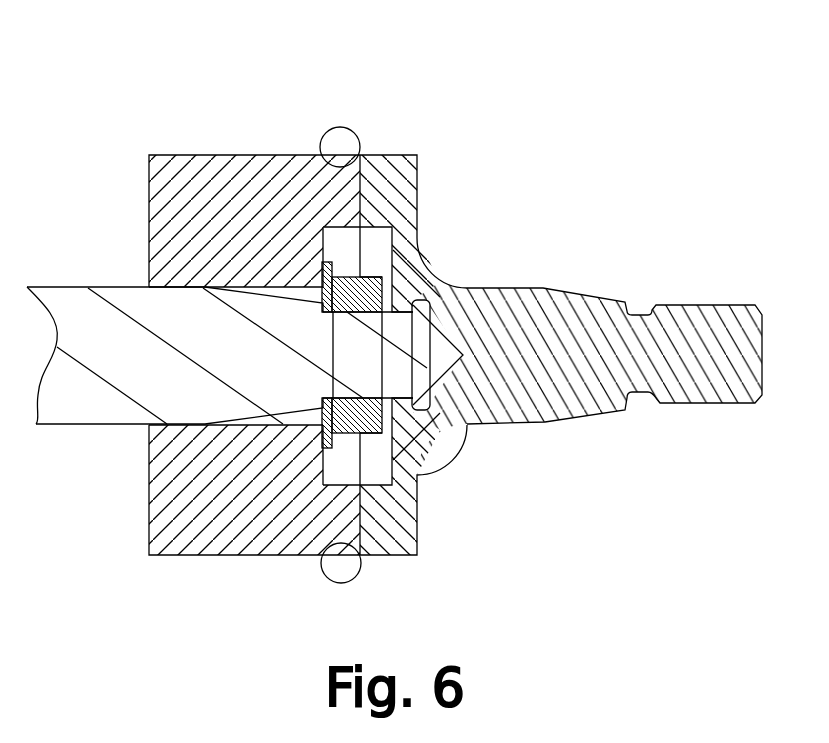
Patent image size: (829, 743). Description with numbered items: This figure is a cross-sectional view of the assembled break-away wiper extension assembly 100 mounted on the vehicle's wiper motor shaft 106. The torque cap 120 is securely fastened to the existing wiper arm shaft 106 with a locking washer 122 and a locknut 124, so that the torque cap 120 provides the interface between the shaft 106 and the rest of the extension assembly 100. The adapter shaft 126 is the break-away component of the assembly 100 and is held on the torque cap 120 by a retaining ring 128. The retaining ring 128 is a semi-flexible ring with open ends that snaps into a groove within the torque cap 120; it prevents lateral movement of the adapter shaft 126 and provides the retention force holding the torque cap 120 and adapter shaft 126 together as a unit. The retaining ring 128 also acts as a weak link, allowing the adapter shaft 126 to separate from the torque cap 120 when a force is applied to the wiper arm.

The wiper extension assembly 100 is at (522, 123).
The wiper motor shaft 106 is at (127, 382).
The torque cap 120 is at (253, 537).
The locking washer 122 is at (323, 278).
The locknut 124 is at (372, 427).
The adapter shaft 126 is at (588, 398).
The retaining ring 128 is at (343, 128).